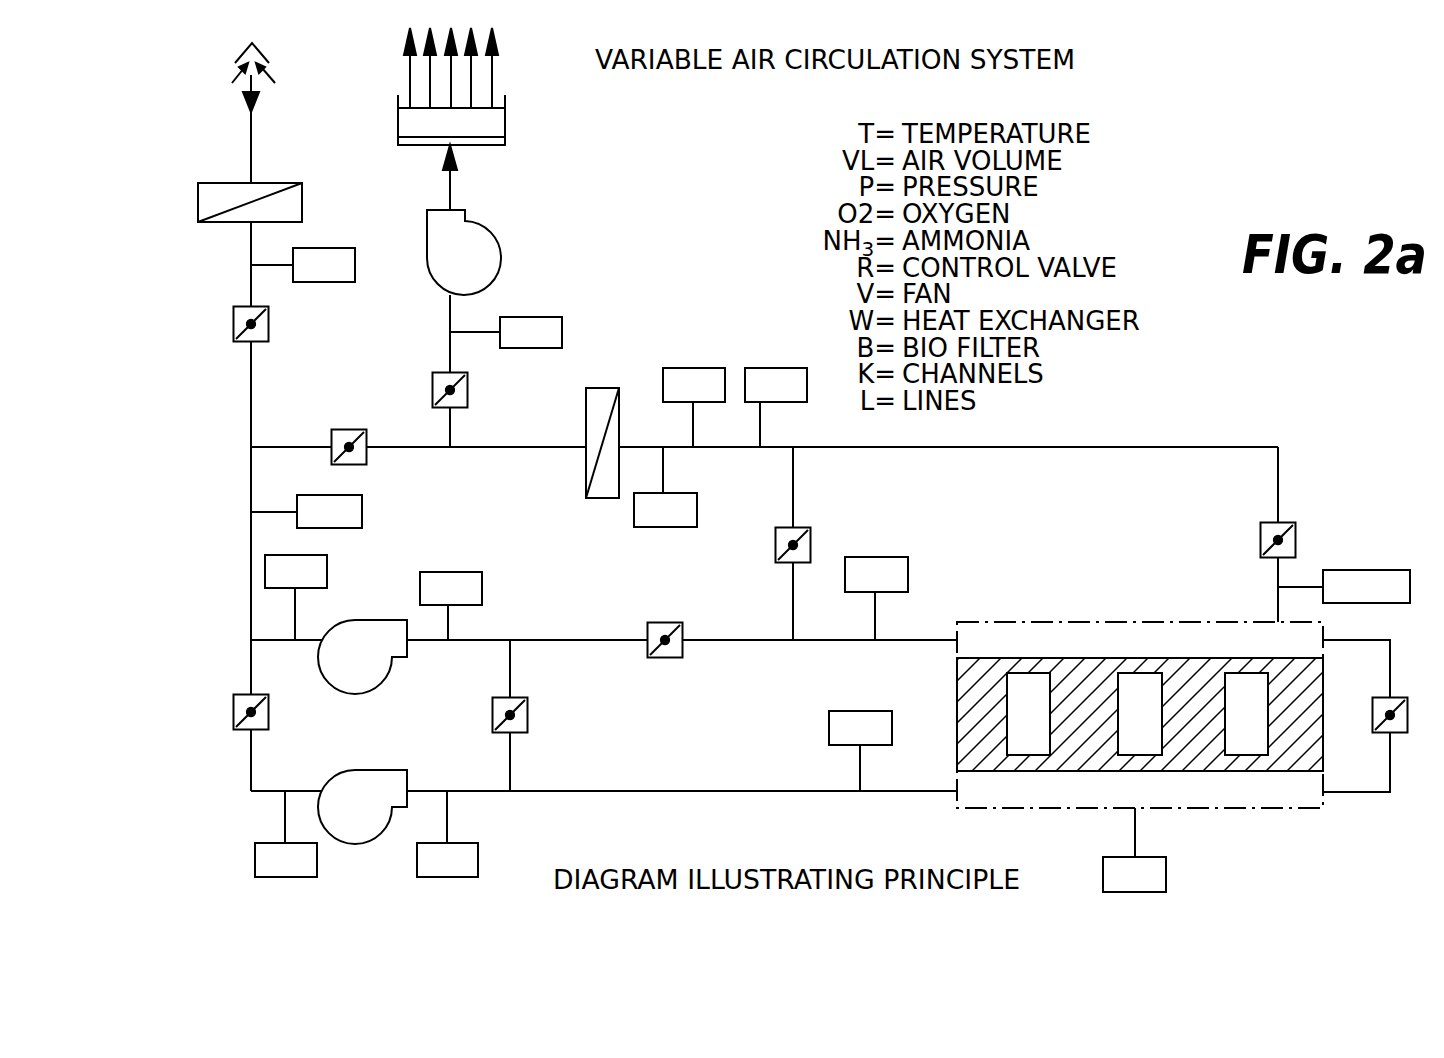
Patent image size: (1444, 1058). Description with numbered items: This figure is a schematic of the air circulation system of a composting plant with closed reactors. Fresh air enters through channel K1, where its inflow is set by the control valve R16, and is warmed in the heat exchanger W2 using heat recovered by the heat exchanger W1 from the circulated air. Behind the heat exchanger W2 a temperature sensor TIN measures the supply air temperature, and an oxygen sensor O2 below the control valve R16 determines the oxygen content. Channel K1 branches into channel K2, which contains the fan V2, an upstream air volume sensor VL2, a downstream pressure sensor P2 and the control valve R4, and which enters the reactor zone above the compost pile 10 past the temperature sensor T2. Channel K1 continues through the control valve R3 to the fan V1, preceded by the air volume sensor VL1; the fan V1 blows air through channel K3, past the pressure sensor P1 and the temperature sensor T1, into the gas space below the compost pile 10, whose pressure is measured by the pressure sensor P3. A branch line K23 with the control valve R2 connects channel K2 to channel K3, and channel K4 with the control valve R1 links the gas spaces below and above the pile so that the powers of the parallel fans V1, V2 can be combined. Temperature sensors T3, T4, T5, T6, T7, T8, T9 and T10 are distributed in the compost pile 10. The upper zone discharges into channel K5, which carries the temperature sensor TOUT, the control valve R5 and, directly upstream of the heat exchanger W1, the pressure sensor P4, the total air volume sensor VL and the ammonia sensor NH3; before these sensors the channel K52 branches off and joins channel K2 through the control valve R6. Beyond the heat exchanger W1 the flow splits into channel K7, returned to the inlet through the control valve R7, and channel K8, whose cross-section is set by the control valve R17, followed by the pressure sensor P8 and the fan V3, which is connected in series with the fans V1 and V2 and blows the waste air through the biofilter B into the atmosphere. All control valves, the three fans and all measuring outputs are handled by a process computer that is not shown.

The compost pile 10 is at (1092, 658).
The channel K1 is at (248, 237).
The channel K2 is at (727, 640).
The channel K3 is at (773, 791).
The channel K4 is at (1435, 628).
The channel K5 is at (1142, 447).
The channel K7 is at (400, 447).
The channel K8 is at (452, 183).
The branch line K23 is at (508, 666).
The channel K52 is at (795, 505).
The control valve R1 is at (1403, 731).
The control valve R2 is at (529, 715).
The control valve R3 is at (227, 712).
The control valve R4 is at (665, 657).
The control valve R5 is at (1259, 540).
The control valve R6 is at (814, 545).
The control valve R7 is at (332, 458).
The control valve R16 is at (274, 331).
The control valve R17 is at (473, 390).
The fan V1 is at (362, 807).
The fan V2 is at (362, 657).
The fan V3 is at (464, 252).
The heat exchanger W1 is at (602, 428).
The heat exchanger W2 is at (251, 189).
The biofilter B is at (464, 86).
The temperature sensor T1 is at (860, 751).
The temperature sensor T2 is at (876, 598).
The temperature sensor T3 is at (1028, 714).
The temperature sensor T4 is at (1028, 716).
The temperature sensor T5 is at (1038, 745).
The temperature sensor T6 is at (1140, 714).
The temperature sensor T7 is at (1140, 716).
The temperature sensor T8 is at (1150, 745).
The temperature sensor T9 is at (1246, 714).
The temperature sensor T10 is at (1247, 716).
The temperature sensor TIN is at (303, 265).
The temperature sensor TOUT is at (1344, 586).
The pressure sensor P1 is at (447, 834).
The pressure sensor P2 is at (451, 606).
The pressure sensor P3 is at (1134, 850).
The pressure sensor P4 is at (776, 407).
The pressure sensor P8 is at (506, 332).
The air volume sensor VL is at (694, 391).
The air volume sensor VL1 is at (286, 834).
The air volume sensor VL2 is at (296, 597).
The oxygen sensor O2 is at (306, 511).
The ammonia sensor NH3 is at (665, 487).